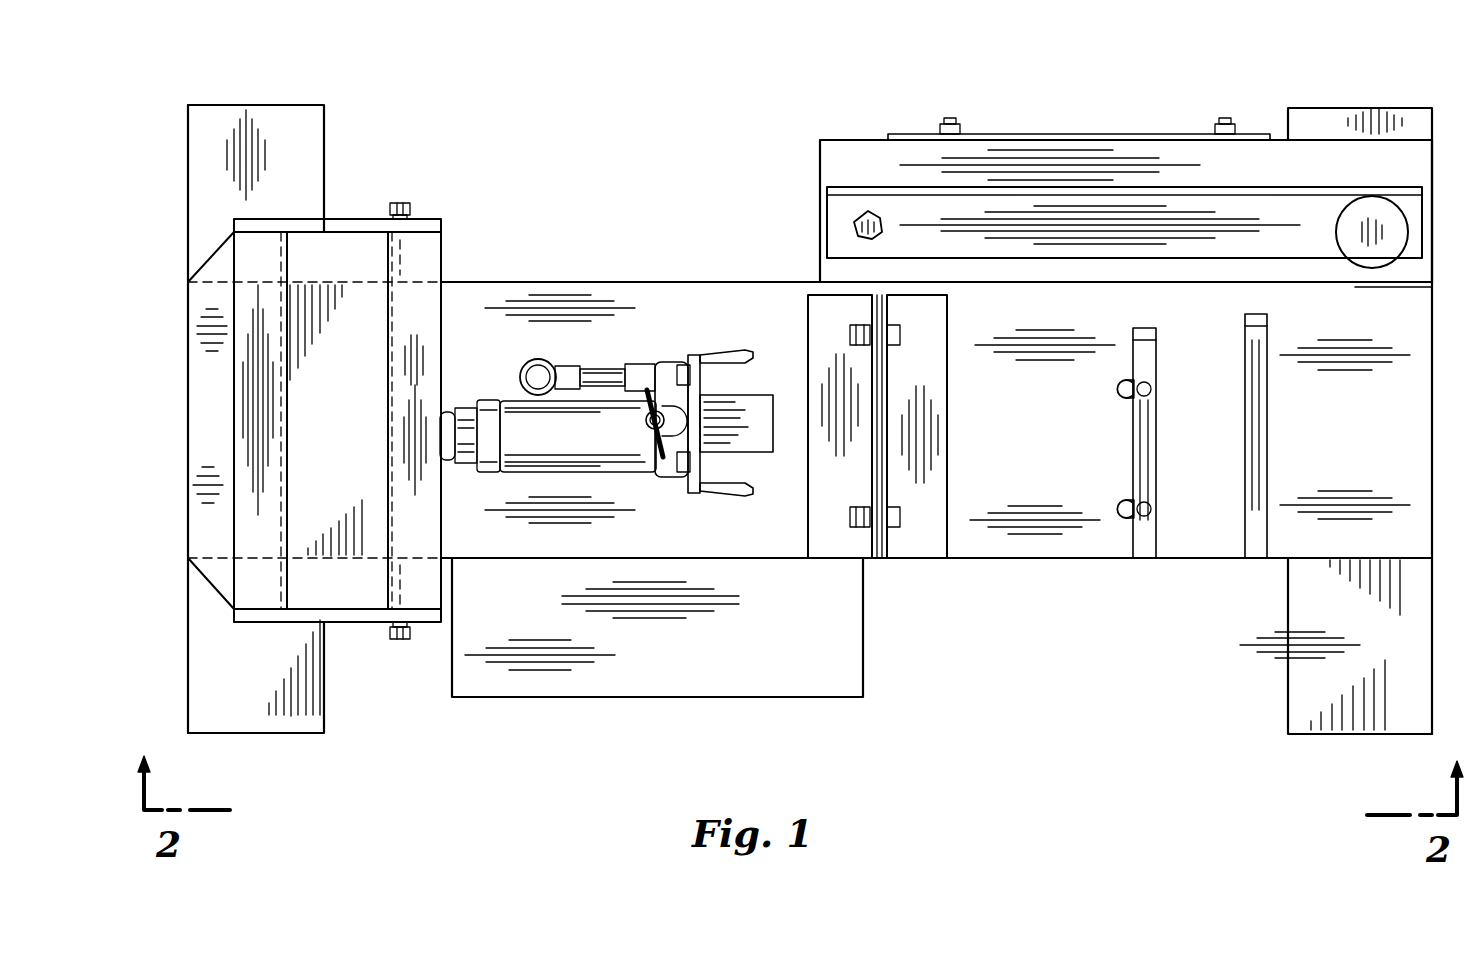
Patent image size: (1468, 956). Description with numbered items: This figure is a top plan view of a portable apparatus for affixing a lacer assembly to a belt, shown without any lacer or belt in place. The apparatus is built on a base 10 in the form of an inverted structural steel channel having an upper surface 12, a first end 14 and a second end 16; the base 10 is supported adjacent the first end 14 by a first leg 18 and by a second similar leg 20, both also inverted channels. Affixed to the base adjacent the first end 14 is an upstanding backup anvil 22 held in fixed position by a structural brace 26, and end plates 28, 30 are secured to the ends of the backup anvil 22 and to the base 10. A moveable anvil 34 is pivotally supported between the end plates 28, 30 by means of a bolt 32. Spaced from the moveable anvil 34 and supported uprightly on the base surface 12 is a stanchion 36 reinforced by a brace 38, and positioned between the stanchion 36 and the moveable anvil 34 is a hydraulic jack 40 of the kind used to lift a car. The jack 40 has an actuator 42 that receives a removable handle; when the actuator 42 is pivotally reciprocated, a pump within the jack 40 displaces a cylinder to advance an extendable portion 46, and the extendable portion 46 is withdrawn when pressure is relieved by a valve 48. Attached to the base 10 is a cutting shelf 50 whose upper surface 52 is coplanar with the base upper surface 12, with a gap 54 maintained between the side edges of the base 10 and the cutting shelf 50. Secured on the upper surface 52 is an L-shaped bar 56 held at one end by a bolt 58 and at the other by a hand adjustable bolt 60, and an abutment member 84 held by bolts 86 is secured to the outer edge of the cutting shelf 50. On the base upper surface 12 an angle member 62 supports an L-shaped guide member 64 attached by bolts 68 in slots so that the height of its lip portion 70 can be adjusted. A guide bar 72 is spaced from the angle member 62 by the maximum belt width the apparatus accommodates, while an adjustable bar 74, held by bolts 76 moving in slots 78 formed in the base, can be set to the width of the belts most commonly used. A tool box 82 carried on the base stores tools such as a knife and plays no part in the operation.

The base 10 is at (1058, 562).
The upper surface 12 is at (1018, 562).
The first end 14 is at (182, 470).
The second end 16 is at (1434, 380).
The first leg 18 is at (192, 657).
The second leg 20 is at (1320, 650).
The backup anvil 22 is at (245, 442).
The structural brace 26 is at (200, 368).
The end plate 28 is at (340, 622).
The end plate 30 is at (418, 222).
The bolt 32 is at (398, 202).
The moveable anvil 34 is at (418, 305).
The stanchion 36 is at (702, 495).
The brace 38 is at (752, 398).
The jack 40 is at (597, 457).
The actuator 42 is at (572, 370).
The extendable portion 46 is at (445, 418).
The valve 48 is at (654, 402).
The cutting shelf 50 is at (862, 136).
The upper surface 52 is at (1188, 150).
The gap 54 is at (1375, 288).
The bar 56 is at (1312, 202).
The bolt 58 is at (852, 235).
The hand adjustable bolt 60 is at (1340, 224).
The angle member 62 is at (822, 487).
The guide member 64 is at (950, 484).
The bolt 68 is at (898, 337).
The lip portion 70 is at (938, 440).
The guide bar 72 is at (1256, 470).
The adjustable bar 74 is at (1148, 452).
The bolt 76 is at (1128, 382).
The slot 78 is at (1120, 498).
The tool box 82 is at (820, 690).
The abutment member 84 is at (1077, 133).
The bolt 86 is at (950, 122).